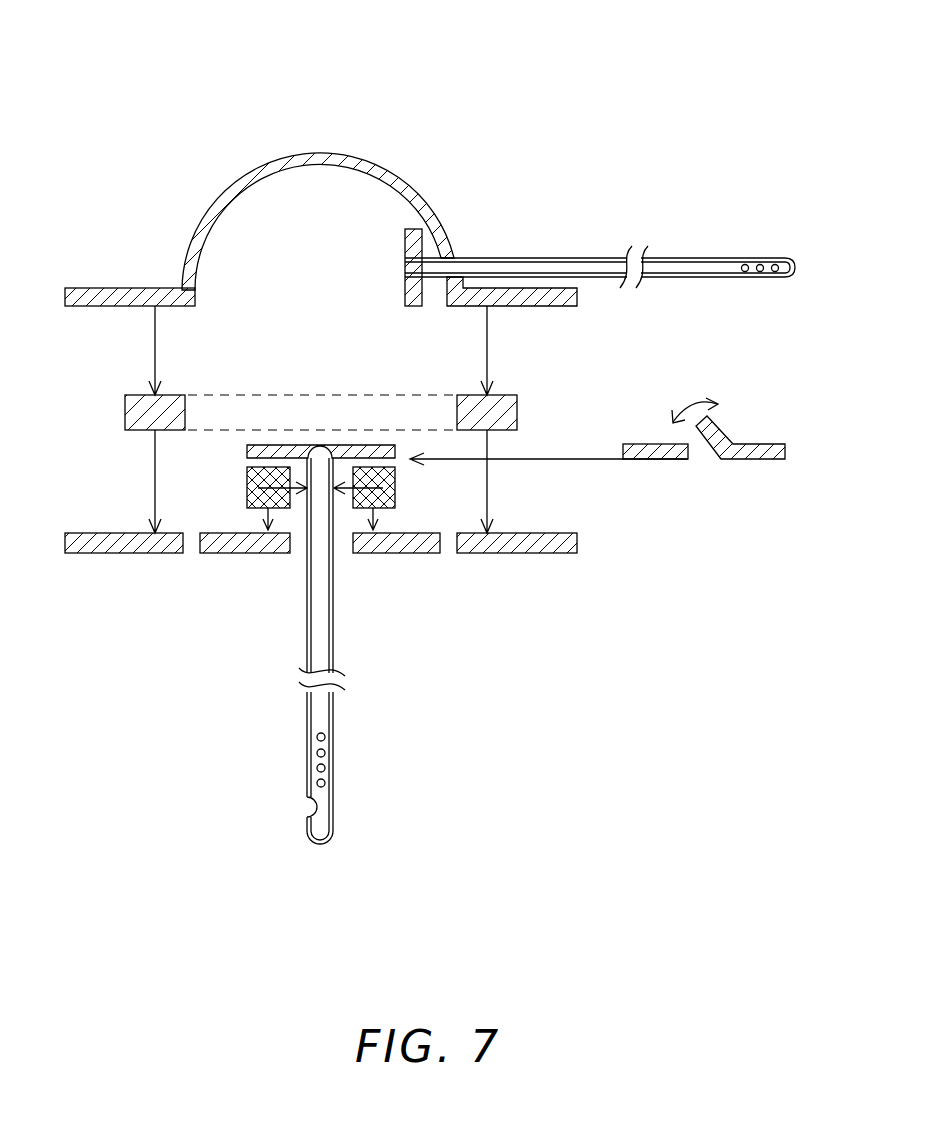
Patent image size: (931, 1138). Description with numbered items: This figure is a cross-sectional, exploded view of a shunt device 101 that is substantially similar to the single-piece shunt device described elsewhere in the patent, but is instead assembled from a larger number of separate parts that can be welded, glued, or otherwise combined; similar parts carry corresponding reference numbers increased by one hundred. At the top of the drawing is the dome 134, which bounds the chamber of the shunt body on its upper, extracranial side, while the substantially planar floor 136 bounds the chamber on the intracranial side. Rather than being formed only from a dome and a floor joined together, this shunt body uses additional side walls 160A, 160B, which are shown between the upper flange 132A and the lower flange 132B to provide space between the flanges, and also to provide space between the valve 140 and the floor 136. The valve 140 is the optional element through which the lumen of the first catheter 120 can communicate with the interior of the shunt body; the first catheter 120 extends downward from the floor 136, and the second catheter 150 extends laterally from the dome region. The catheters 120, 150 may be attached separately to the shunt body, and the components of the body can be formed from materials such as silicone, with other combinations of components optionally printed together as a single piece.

The shunt device 101 is at (124, 80).
The dome 134 is at (341, 150).
The flange 132A is at (118, 286).
The catheter 150 is at (690, 257).
The additional wall 160A is at (124, 402).
The additional wall 160B is at (246, 487).
The floor 136 is at (405, 557).
The flange 132B is at (96, 556).
The valve 140 is at (753, 461).
The first catheter 120 is at (336, 728).